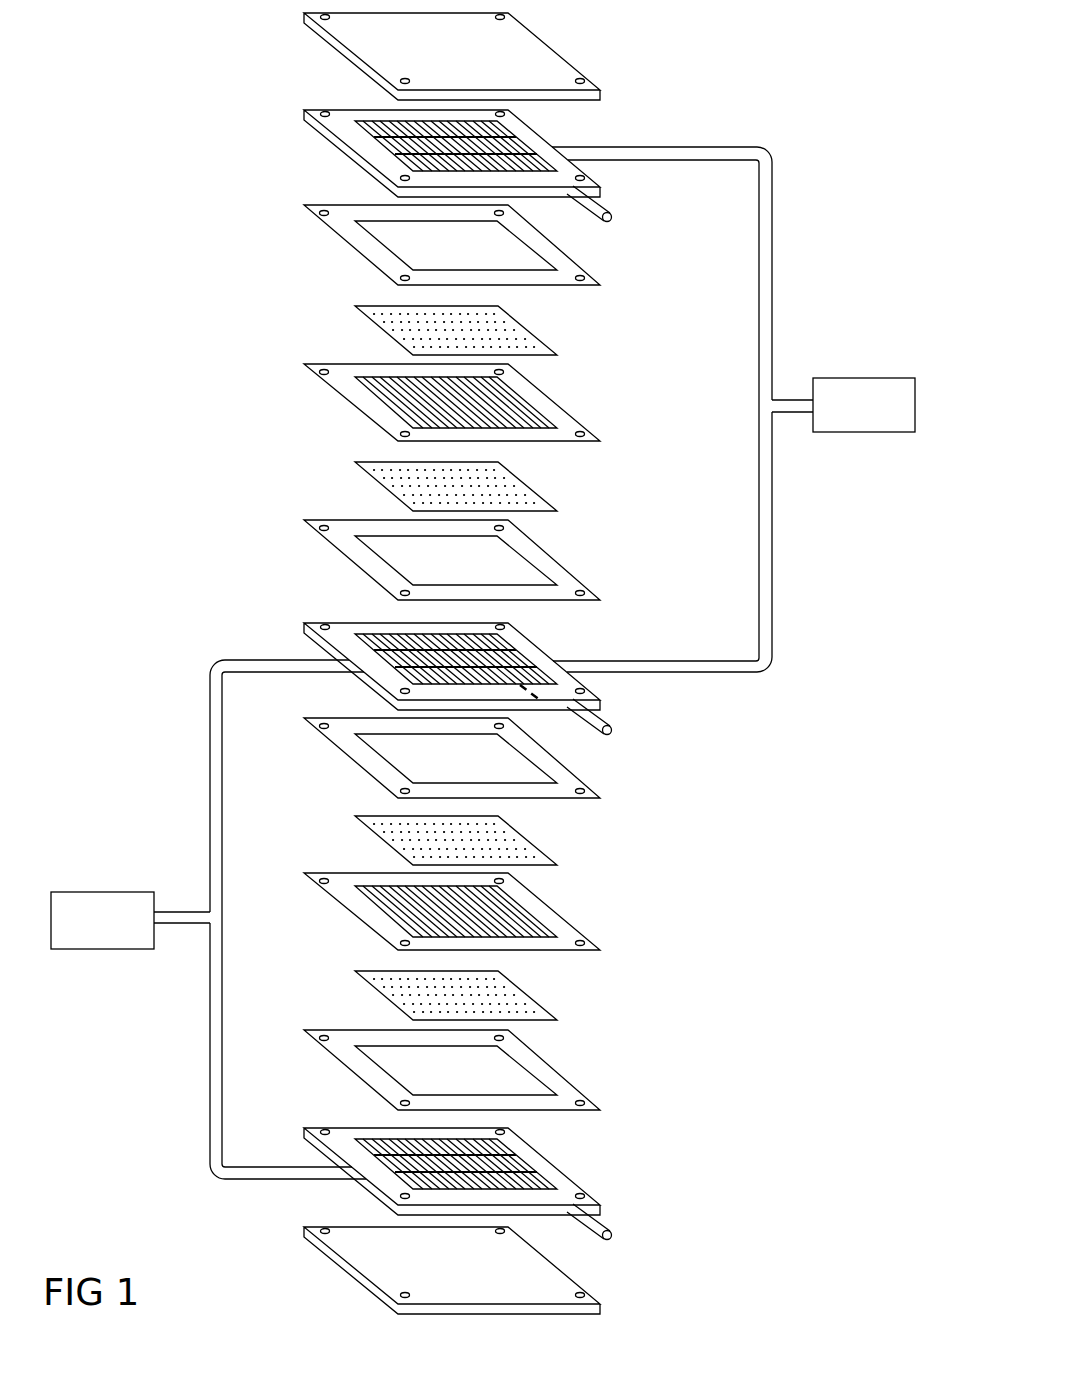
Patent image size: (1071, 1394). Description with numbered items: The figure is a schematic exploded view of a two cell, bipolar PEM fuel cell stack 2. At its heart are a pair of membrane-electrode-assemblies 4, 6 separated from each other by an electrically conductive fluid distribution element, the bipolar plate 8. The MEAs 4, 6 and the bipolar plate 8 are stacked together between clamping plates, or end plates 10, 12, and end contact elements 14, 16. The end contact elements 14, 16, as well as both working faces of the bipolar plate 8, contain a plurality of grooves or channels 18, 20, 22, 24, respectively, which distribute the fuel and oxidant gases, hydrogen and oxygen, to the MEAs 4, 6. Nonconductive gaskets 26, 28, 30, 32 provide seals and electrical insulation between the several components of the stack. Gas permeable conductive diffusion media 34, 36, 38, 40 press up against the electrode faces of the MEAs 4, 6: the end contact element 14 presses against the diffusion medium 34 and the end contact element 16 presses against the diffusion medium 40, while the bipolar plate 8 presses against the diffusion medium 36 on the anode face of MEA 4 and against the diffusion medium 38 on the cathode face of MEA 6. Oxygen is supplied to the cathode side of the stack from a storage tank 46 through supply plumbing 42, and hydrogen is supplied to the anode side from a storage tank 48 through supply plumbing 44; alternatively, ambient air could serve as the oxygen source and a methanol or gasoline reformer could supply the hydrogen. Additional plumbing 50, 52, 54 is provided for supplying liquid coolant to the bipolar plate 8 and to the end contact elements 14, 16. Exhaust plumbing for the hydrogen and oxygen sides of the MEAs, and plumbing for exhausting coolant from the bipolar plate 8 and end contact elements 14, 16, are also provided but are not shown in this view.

The bipolar fuel cell stack 2 is at (800, 137).
The membrane-electrode-assembly 4 is at (345, 402).
The membrane-electrode-assembly 6 is at (565, 922).
The bipolar plate 8 is at (483, 684).
The end plate 10 is at (345, 50).
The end plate 12 is at (584, 1285).
The end contact element 14 is at (459, 135).
The end contact element 16 is at (515, 1158).
The channels 18 is at (512, 148).
The channels 20 is at (372, 648).
The channels 22 is at (520, 685).
The channels 24 is at (520, 1162).
The nonconductive gasket 26 is at (339, 234).
The nonconductive gasket 28 is at (347, 558).
The nonconductive gasket 30 is at (593, 790).
The nonconductive gasket 32 is at (560, 1073).
The diffusion medium 34 is at (365, 317).
The diffusion medium 36 is at (365, 478).
The diffusion medium 38 is at (535, 848).
The diffusion medium 40 is at (548, 1000).
The supply plumbing 42 is at (765, 568).
The supply plumbing 44 is at (213, 706).
The storage tank 46 is at (857, 378).
The storage tank 48 is at (70, 892).
The coolant plumbing 50 is at (610, 212).
The coolant plumbing 52 is at (608, 722).
The coolant plumbing 54 is at (600, 1225).